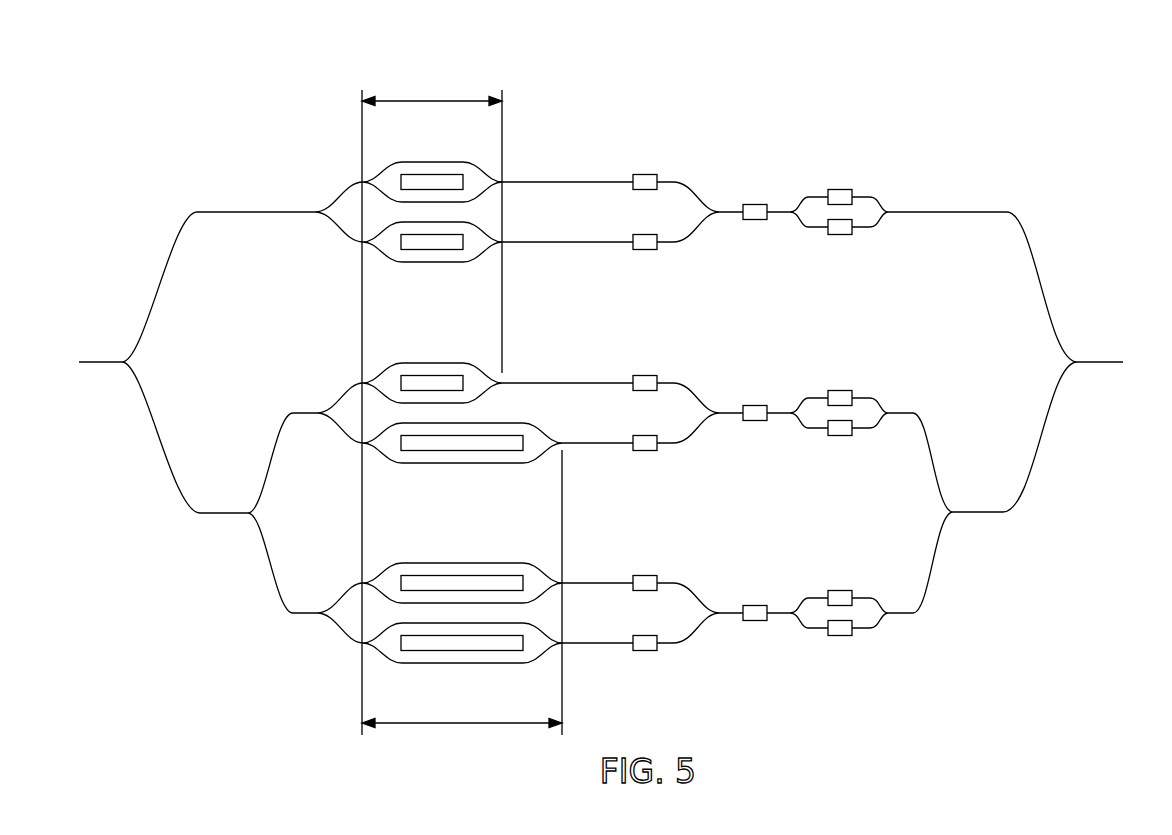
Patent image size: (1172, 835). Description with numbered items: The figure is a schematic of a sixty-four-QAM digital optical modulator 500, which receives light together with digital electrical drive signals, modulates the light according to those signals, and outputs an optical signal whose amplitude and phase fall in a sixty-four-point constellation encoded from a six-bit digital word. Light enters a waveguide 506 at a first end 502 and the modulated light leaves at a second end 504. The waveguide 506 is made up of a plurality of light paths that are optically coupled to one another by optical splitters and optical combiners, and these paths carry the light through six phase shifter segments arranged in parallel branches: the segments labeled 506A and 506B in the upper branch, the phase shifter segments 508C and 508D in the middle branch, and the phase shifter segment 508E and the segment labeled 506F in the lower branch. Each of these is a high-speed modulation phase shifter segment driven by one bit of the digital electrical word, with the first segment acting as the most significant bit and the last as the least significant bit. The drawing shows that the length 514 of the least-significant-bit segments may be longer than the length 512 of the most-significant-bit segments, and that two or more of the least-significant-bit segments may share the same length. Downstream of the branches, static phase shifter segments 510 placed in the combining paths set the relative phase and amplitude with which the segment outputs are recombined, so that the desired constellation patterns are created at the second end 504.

The digital optical modulator 500 is at (806, 76).
The first end 502 is at (80, 358).
The second end 504 is at (1123, 358).
The waveguide 506 is at (211, 210).
The Mach-Zehnder modulator 506A is at (432, 160).
The Mach-Zehnder modulator 506B is at (413, 263).
The phase shifter segment 508C is at (450, 360).
The phase shifter segment 508D is at (430, 464).
The phase shifter segment 508E is at (492, 561).
The long Mach-Zehnder modulator 506F is at (460, 665).
The static phase shifter segments 510 is at (645, 173).
The length 512 is at (430, 100).
The length 514 is at (460, 724).